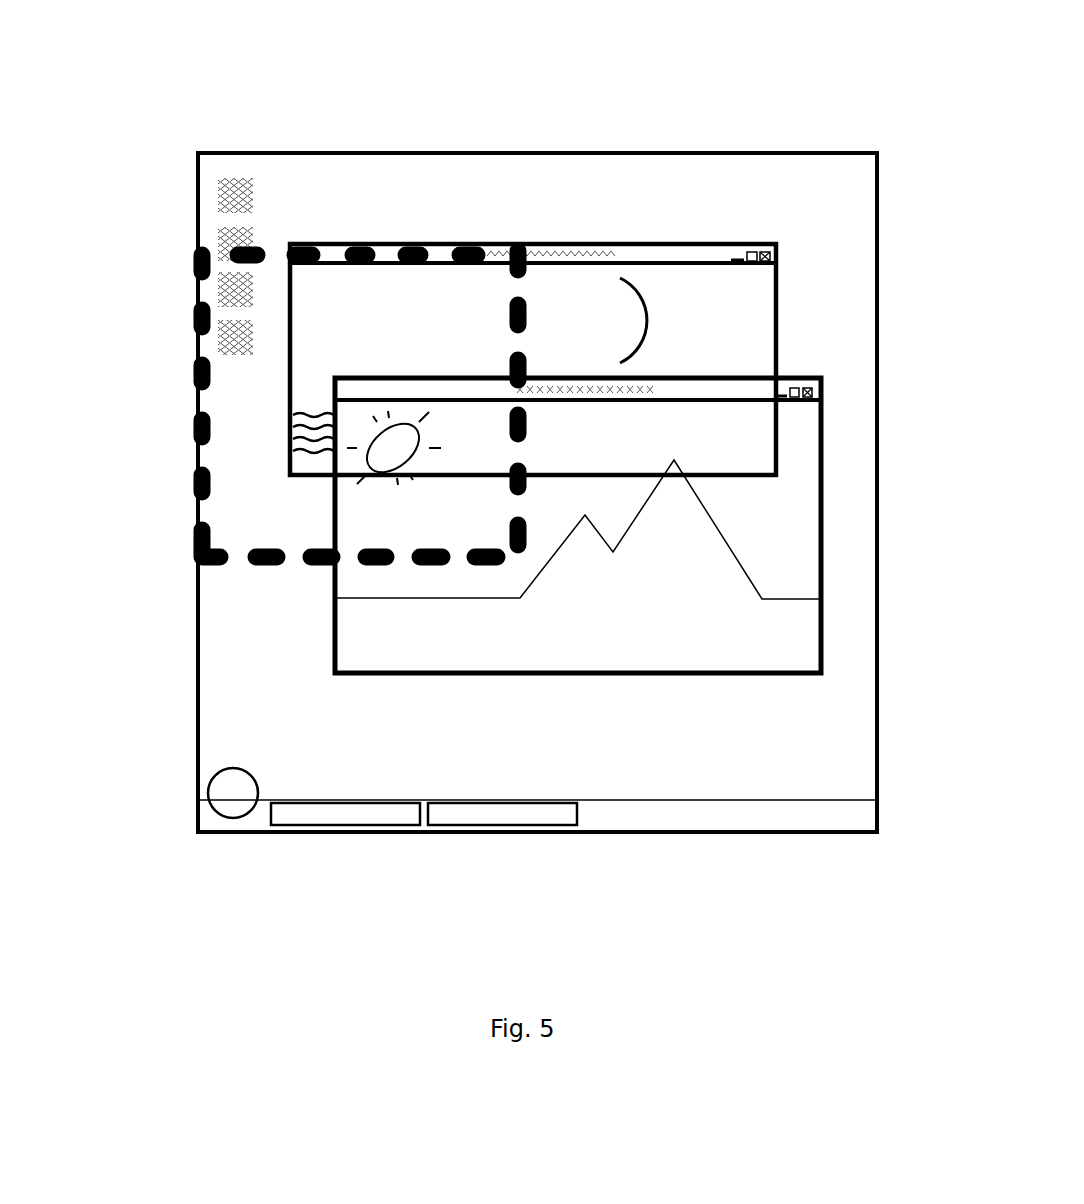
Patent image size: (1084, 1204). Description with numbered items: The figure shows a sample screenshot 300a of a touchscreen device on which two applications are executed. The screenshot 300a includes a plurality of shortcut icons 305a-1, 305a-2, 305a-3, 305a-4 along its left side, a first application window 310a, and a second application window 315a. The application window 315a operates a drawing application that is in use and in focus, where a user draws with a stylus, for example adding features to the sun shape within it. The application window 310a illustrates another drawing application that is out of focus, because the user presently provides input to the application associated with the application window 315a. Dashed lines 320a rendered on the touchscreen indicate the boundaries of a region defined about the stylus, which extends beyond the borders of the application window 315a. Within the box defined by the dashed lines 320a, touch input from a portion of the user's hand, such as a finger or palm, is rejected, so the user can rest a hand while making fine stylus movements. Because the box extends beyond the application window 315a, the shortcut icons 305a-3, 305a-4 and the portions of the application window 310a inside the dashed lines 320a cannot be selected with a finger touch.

The sample screenshot 300a is at (767, 88).
The shortcut icon 305a-1 is at (218, 198).
The shortcut icon 305a-2 is at (218, 243).
The shortcut icon 305a-3 is at (218, 288).
The shortcut icon 305a-4 is at (218, 337).
The first application window 310a is at (777, 334).
The second application window 315a is at (672, 674).
The dashed lines 320a is at (323, 563).